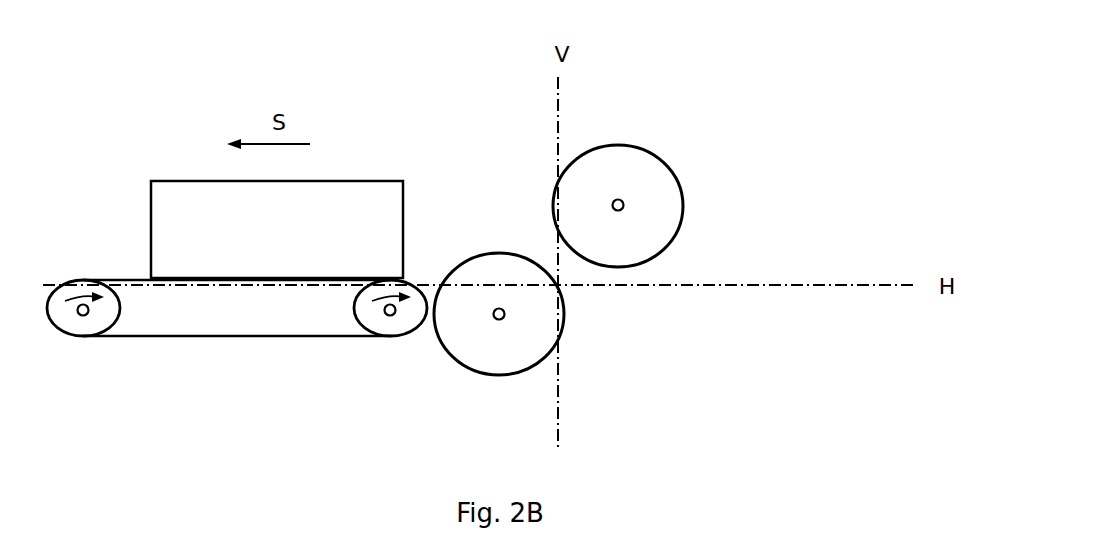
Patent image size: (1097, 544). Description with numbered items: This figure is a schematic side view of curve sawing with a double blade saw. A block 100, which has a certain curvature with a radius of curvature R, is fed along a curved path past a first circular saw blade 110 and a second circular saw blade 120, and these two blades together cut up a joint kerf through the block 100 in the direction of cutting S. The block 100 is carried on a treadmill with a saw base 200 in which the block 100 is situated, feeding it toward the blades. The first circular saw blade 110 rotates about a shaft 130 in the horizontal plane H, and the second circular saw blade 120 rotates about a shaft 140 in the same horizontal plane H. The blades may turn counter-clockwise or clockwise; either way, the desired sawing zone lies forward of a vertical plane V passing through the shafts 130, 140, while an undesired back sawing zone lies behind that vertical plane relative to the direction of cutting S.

The block 100 is at (254, 237).
The saw base 200 is at (125, 280).
The first circular saw blade 110 is at (512, 351).
The second circular saw blade 120 is at (643, 223).
The shaft 130 is at (493, 320).
The shaft 140 is at (624, 201).